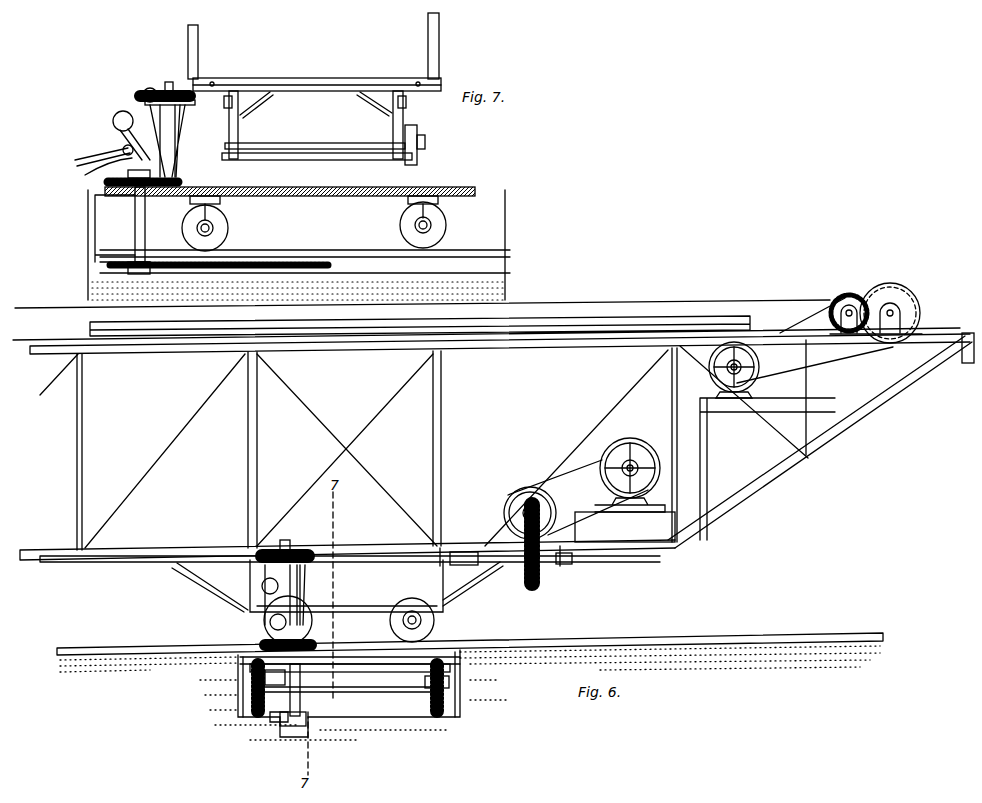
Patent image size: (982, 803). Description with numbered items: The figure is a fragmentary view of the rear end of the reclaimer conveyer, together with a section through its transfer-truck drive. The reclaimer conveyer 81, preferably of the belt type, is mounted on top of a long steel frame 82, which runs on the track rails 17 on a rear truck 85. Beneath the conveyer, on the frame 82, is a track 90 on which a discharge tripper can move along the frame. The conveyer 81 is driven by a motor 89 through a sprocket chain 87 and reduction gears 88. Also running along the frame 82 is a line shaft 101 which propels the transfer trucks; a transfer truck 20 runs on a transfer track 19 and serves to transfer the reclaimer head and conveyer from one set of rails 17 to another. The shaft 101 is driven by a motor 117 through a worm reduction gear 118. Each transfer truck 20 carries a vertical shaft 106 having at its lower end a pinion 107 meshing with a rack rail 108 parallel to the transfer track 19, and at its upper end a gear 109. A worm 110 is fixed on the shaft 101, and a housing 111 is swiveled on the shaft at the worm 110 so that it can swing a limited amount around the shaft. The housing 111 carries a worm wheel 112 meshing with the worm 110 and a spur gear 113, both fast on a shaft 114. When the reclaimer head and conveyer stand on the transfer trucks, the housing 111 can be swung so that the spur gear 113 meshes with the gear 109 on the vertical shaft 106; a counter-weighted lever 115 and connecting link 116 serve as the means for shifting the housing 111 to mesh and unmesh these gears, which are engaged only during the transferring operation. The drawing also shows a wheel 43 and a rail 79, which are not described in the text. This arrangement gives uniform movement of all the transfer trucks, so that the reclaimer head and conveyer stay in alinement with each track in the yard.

In FIG. 7, the track rails 17 is at (222, 191).
In FIG. 6, the track rails 17 is at (152, 646).
In FIG. 6, the transfer tracks 19 is at (433, 713).
In FIG. 7, the transfer truck 20 is at (303, 188).
In FIG. 6, the transfer truck 20 is at (440, 657).
In FIG. 7, the wheel 43 is at (418, 141).
In FIG. 6, the wheel 43 is at (412, 600).
In FIG. 7, the rail 79 is at (312, 250).
In FIG. 6, the reclaimer conveyer 81 is at (574, 306).
In FIG. 7, the frame 82 is at (300, 78).
In FIG. 6, the frame 82 is at (170, 356).
In FIG. 7, the rear truck 85 is at (255, 150).
In FIG. 6, the rear truck 85 is at (447, 602).
In FIG. 6, the sprocket chain 87 is at (832, 358).
In FIG. 6, the reduction gears 88 is at (888, 290).
In FIG. 6, the motor 89 is at (756, 380).
In FIG. 6, the track 90 is at (640, 303).
In FIG. 7, the line shaft 101 is at (145, 103).
In FIG. 6, the line shaft 101 is at (105, 560).
In FIG. 7, the vertical shaft 106 is at (138, 220).
In FIG. 6, the vertical shaft 106 is at (315, 672).
In FIG. 7, the pinion 107 is at (148, 274).
In FIG. 6, the pinion 107 is at (280, 738).
In FIG. 7, the rack rail 108 is at (300, 258).
In FIG. 6, the rack rail 108 is at (268, 727).
In FIG. 7, the gear 109 is at (120, 190).
In FIG. 6, the gear 109 is at (312, 638).
In FIG. 7, the worm 110 is at (143, 93).
In FIG. 6, the worm 110 is at (268, 550).
In FIG. 7, the housing 111 is at (155, 88).
In FIG. 6, the housing 111 is at (322, 533).
In FIG. 7, the worm wheel 112 is at (182, 103).
In FIG. 7, the spur gear 113 is at (160, 168).
In FIG. 7, the shaft 114 is at (178, 128).
In FIG. 6, the shaft 114 is at (310, 592).
In FIG. 7, the counter-weighted lever 115 is at (92, 160).
In FIG. 6, the counter-weighted lever 115 is at (262, 623).
In FIG. 7, the connecting link 116 is at (88, 176).
In FIG. 6, the motor 117 is at (633, 445).
In FIG. 6, the worm reduction gear 118 is at (551, 505).